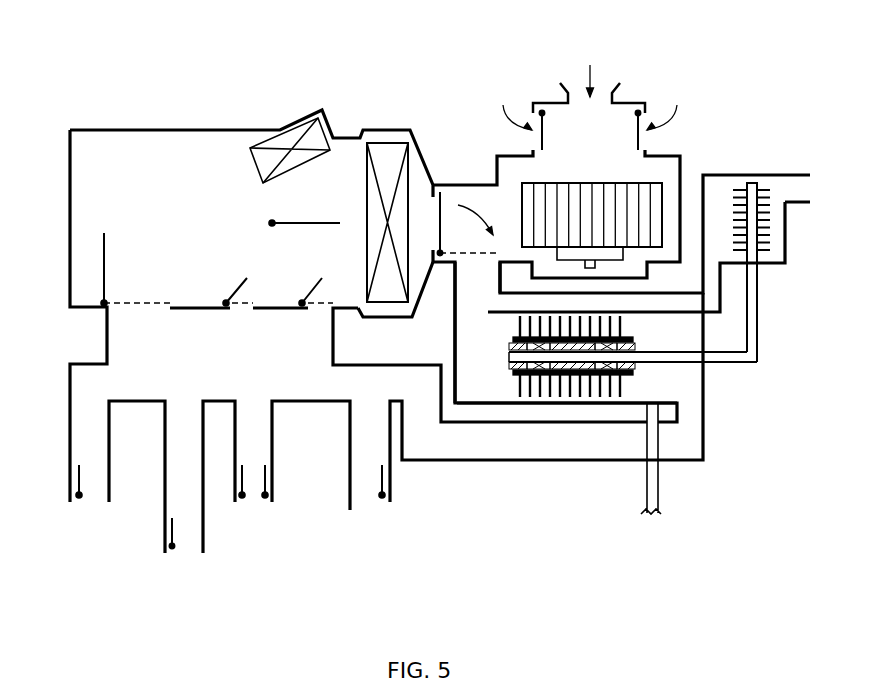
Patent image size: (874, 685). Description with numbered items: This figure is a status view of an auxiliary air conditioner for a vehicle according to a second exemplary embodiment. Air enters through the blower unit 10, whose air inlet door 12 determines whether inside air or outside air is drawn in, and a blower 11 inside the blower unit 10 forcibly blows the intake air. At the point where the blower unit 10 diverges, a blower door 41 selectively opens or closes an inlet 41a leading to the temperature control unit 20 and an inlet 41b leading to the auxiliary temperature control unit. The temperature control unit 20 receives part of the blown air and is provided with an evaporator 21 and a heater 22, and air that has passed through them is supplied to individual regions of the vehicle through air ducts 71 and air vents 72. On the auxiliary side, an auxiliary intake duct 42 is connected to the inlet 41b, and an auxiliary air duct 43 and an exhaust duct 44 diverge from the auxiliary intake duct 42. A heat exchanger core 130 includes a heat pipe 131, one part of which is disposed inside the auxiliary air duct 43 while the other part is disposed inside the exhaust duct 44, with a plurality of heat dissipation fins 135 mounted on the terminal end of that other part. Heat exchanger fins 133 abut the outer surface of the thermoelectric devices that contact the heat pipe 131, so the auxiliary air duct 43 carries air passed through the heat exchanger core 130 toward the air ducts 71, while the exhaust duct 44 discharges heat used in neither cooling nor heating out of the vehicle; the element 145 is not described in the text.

The temperature control unit 20 is at (143, 113).
The heater 22 is at (280, 128).
The evaporator 21 is at (385, 150).
The inlet 41a is at (436, 190).
The blower door 41 is at (441, 217).
The blower unit 10 is at (570, 138).
The air inlet door 12 is at (650, 118).
The blower 11 is at (640, 190).
The heat dissipation fins 135 is at (762, 190).
The heat pipe 131 is at (752, 300).
The exhaust duct 44 is at (668, 305).
The auxiliary air duct 43 is at (653, 377).
The heat exchanger fins 133 is at (627, 387).
The support pillar 145 is at (655, 487).
The heat exchanger core 130 is at (579, 405).
The inlet 41b is at (492, 280).
The auxiliary intake duct 42 is at (470, 282).
The air ducts 71 is at (135, 400).
The air vents 72 is at (187, 540).